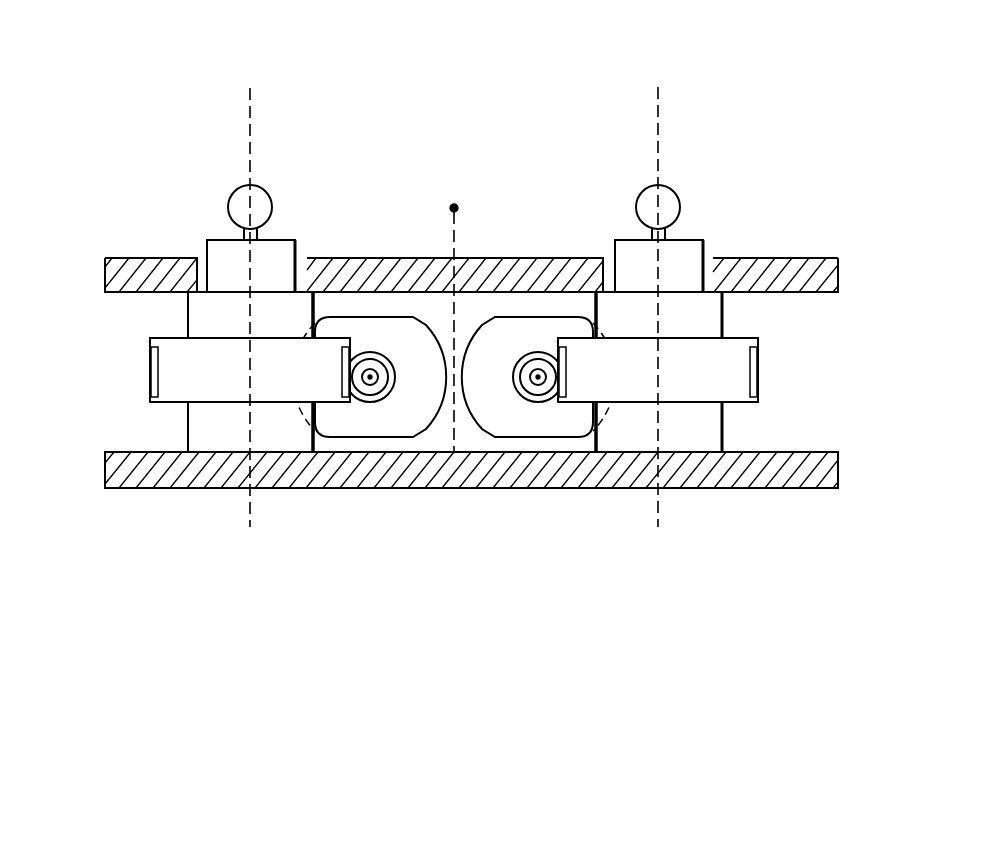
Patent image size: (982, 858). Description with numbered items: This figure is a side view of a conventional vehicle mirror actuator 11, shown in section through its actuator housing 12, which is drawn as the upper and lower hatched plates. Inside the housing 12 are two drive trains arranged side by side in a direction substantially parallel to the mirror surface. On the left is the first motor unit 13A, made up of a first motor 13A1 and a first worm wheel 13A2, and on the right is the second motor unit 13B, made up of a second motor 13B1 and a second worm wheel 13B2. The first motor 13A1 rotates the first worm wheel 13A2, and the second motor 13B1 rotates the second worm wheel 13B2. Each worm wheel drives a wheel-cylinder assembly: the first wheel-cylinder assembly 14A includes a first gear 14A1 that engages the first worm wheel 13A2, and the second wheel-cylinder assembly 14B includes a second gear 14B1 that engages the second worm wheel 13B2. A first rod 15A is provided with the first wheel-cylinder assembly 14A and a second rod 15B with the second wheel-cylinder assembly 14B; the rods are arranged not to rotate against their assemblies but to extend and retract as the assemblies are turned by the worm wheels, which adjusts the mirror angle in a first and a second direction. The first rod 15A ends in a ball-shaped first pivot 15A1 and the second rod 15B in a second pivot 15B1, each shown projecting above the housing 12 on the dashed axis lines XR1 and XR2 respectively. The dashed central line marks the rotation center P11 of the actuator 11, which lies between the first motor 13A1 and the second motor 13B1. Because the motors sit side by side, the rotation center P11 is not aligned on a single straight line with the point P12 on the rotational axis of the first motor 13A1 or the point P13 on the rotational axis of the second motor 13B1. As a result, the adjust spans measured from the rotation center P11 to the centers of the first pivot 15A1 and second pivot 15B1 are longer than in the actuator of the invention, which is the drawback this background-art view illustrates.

The vehicle mirror actuator 11 is at (208, 102).
The actuator housing 12 is at (789, 479).
The first motor unit 13A is at (402, 90).
The first motor 13A1 is at (360, 317).
The first worm wheel 13A2 is at (357, 353).
The second motor unit 13B is at (592, 90).
The second motor 13B1 is at (549, 317).
The second worm wheel 13B2 is at (543, 353).
The first wheel-cylinder assembly 14A is at (193, 362).
The first gear 14A1 is at (163, 390).
The second wheel-cylinder assembly 14B is at (717, 365).
The second gear 14B1 is at (742, 392).
The first rod 15A is at (222, 248).
The first pivot 15A1 is at (238, 196).
The second rod 15B is at (630, 243).
The second pivot 15B1 is at (670, 200).
The first rotation axis XR1 is at (251, 310).
The second rotation axis XR2 is at (661, 310).
The rotation center P11 is at (454, 204).
The point on the first rotational axis P12 is at (370, 382).
The point on the second rotational axis P13 is at (538, 382).